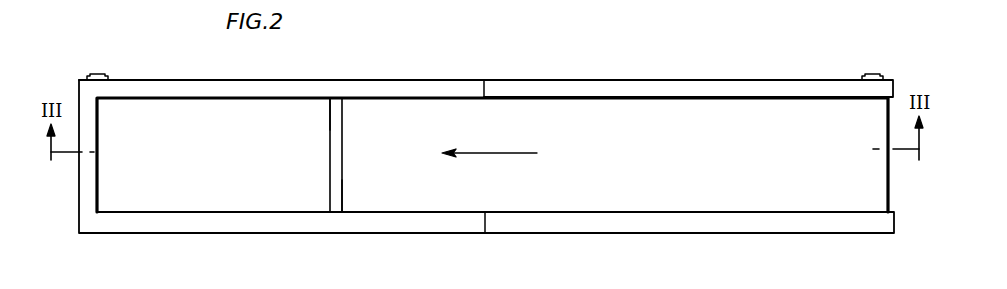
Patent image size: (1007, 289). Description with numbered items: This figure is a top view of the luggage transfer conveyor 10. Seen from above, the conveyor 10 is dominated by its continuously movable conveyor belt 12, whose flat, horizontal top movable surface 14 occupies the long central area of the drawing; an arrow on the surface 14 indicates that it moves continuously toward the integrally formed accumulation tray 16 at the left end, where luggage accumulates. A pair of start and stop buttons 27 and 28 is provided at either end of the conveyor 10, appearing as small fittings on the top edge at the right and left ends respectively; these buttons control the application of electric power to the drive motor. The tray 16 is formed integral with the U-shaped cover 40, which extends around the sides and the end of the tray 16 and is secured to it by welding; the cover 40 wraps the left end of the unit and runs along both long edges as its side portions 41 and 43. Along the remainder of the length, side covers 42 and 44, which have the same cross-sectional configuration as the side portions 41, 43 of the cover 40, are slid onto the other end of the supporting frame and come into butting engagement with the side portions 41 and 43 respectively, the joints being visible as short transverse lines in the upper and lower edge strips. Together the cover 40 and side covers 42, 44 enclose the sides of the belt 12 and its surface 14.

The luggage transfer conveyor 10 is at (504, 156).
The conveyor belt 12 is at (890, 178).
The top movable surface 14 is at (565, 115).
The accumulation tray 16 is at (177, 105).
The start and stop button 27 is at (870, 73).
The start and stop button 28 is at (97, 74).
The U-shaped cover 40 is at (221, 236).
The side portion of cover 41 is at (337, 88).
The side cover 42 is at (665, 87).
The side portion of cover 43 is at (357, 225).
The side cover 44 is at (746, 222).